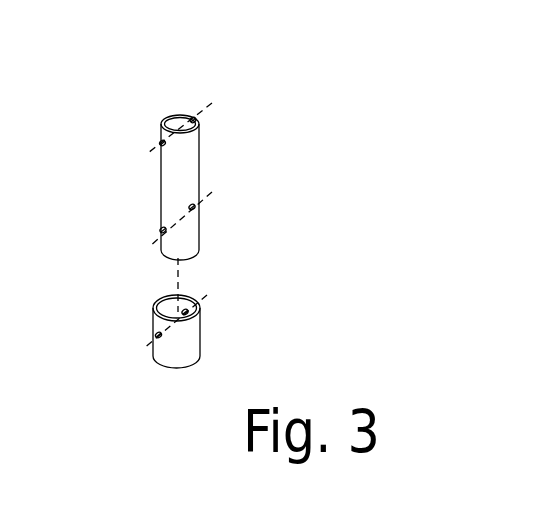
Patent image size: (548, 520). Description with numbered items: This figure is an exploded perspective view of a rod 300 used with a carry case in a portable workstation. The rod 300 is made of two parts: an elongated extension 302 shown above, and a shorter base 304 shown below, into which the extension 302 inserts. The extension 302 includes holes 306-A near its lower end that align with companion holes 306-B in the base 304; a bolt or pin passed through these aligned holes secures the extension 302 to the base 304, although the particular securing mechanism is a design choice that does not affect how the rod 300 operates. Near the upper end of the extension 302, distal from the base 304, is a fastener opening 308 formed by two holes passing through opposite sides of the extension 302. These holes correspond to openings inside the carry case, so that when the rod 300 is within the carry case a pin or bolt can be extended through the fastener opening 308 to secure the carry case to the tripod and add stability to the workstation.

The rod 300 is at (236, 72).
The extension 302 is at (199, 171).
The base 304 is at (200, 323).
The holes 306-A is at (160, 230).
The companion holes 306-B is at (155, 335).
The fastener opening 308 is at (160, 143).